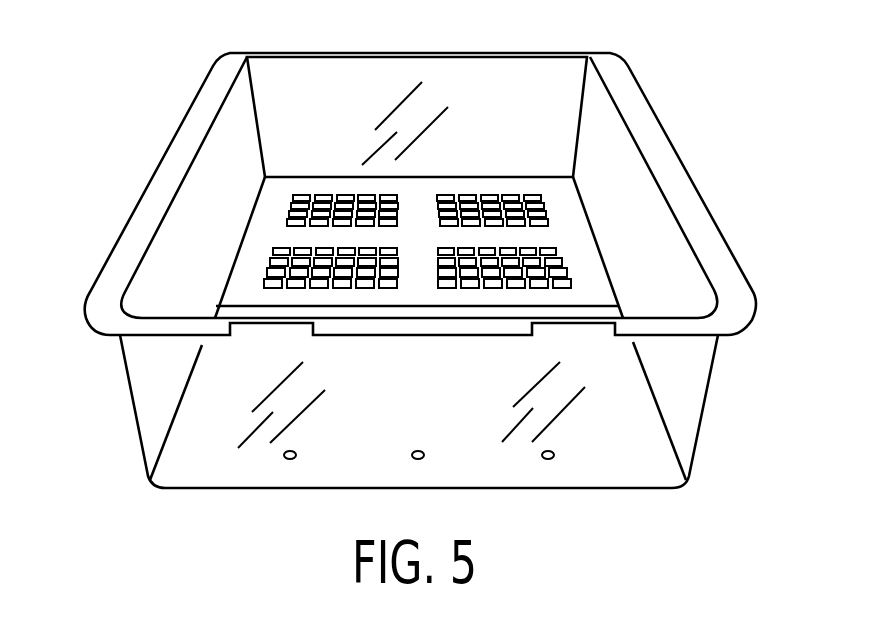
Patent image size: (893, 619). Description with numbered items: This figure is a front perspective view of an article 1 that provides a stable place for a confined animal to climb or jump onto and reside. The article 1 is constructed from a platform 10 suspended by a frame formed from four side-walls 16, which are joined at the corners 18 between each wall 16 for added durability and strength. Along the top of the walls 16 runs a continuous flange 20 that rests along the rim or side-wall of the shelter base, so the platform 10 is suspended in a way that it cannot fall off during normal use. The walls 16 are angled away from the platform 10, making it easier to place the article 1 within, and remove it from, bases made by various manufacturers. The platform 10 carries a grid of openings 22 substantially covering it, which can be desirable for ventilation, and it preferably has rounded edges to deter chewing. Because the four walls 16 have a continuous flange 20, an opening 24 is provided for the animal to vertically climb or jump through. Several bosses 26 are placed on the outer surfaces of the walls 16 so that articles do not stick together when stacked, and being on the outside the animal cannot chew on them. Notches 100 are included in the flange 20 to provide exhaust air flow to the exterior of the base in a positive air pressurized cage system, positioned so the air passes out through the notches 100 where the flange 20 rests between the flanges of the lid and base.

The article 1 is at (134, 476).
The platform 10 is at (572, 237).
The side-walls 16 is at (410, 73).
The corners 18 is at (130, 403).
The continuous flange 20 is at (142, 213).
The grid of openings 22 is at (393, 197).
The opening 24 is at (583, 304).
The bosses 26 is at (296, 452).
The notches 100 is at (273, 323).